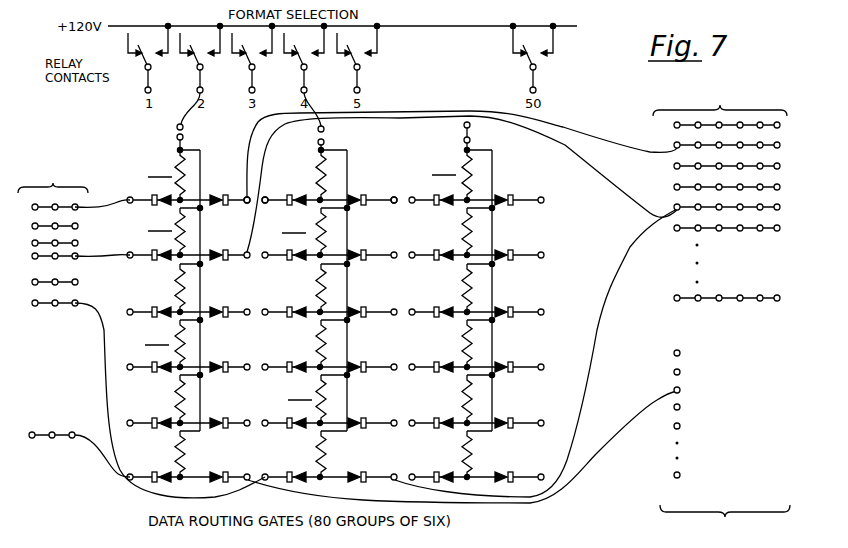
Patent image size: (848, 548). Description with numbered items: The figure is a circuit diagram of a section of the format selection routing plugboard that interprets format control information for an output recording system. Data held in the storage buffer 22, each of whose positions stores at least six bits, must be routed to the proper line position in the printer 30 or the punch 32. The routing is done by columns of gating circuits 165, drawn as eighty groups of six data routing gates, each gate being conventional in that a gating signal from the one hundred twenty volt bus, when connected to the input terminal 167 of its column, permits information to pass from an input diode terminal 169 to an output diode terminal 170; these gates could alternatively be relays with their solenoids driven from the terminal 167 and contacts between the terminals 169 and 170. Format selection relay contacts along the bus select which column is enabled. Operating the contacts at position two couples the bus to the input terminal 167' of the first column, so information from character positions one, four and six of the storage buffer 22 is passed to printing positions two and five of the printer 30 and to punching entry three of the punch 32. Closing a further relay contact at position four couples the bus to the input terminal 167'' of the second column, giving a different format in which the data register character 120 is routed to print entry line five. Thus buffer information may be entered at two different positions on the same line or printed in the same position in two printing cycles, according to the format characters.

The storage buffer 22 is at (60, 183).
The printer 30 is at (730, 102).
The punch 32 is at (735, 539).
The data register character position 120 is at (72, 463).
The gating circuits 165 is at (308, 313).
The input terminal 167 is at (450, 136).
The input terminal of first column of gating circuits 167' is at (200, 121).
The input terminal of second column of gates 167'' is at (335, 121).
The input diode terminal 169 is at (268, 197).
The output diode terminal 170 is at (387, 189).